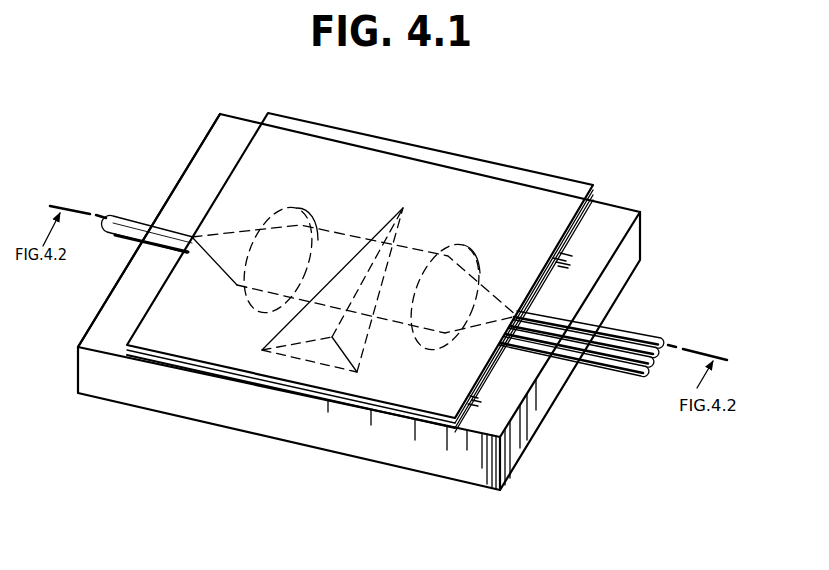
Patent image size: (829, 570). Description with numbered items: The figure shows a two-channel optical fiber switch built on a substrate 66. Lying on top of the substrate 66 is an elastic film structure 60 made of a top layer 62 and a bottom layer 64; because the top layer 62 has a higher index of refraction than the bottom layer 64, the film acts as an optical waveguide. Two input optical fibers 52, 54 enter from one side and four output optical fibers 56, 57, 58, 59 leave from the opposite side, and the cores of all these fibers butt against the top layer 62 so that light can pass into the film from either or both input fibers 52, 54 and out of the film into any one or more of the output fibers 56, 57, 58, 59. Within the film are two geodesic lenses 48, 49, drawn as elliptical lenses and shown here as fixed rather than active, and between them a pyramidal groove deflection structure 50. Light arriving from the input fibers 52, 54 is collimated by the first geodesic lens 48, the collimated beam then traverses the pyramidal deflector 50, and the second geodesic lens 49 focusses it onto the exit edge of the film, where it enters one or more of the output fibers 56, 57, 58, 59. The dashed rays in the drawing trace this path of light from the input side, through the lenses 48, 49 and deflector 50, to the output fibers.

The geodesic lens 48 is at (278, 214).
The geodesic lens 49 is at (463, 243).
The pyramidal groove deflection structure 50 is at (400, 208).
The input optical fiber 52 is at (137, 220).
The input optical fiber 54 is at (124, 244).
The output optical fiber 56 is at (617, 330).
The output optical fiber 57 is at (650, 338).
The output optical fiber 58 is at (588, 348).
The output optical fiber 59 is at (623, 372).
The elastic film structure 60 is at (608, 191).
The top layer 62 is at (343, 405).
The bottom layer 64 is at (305, 396).
The substrate 66 is at (442, 462).